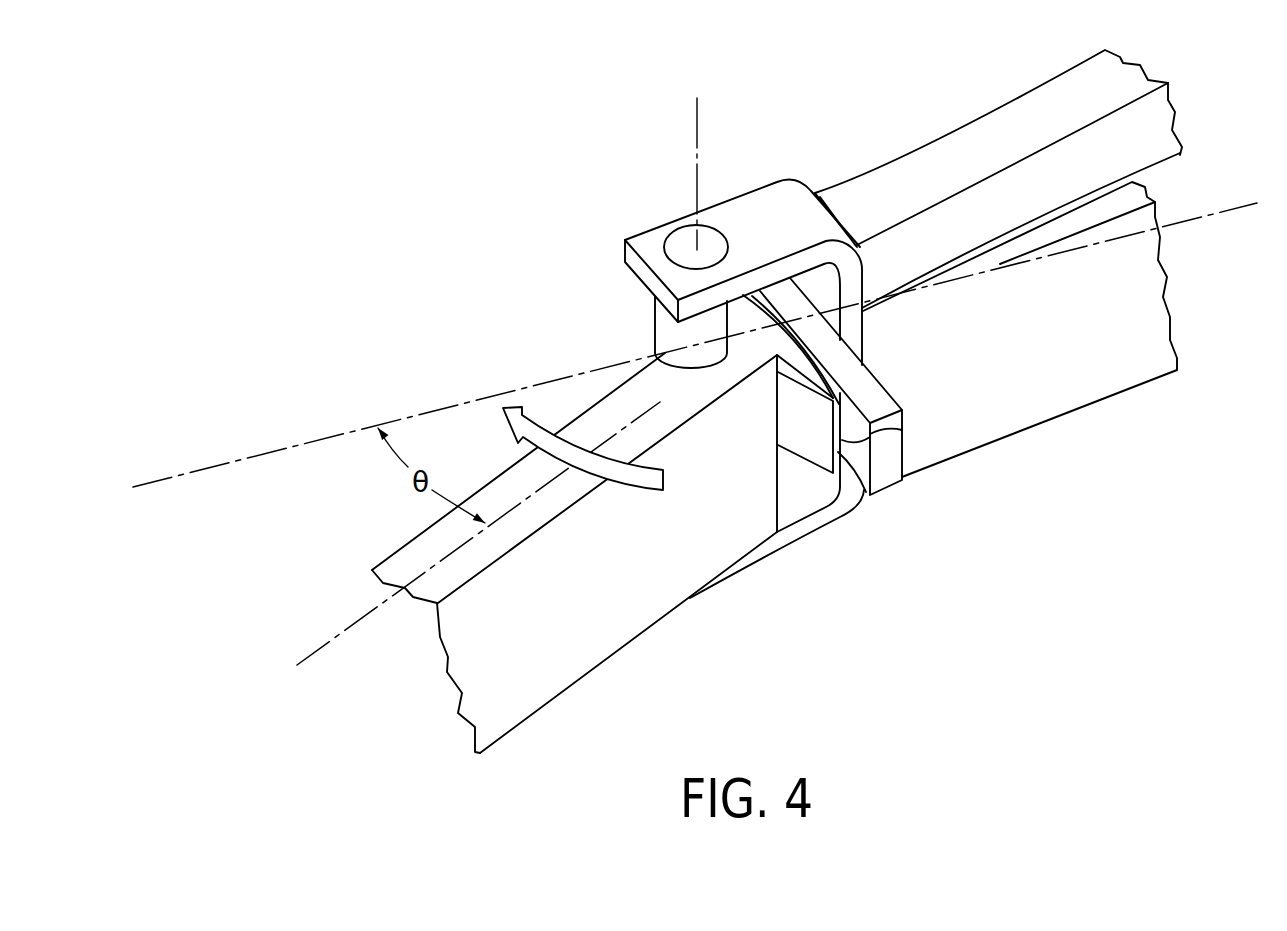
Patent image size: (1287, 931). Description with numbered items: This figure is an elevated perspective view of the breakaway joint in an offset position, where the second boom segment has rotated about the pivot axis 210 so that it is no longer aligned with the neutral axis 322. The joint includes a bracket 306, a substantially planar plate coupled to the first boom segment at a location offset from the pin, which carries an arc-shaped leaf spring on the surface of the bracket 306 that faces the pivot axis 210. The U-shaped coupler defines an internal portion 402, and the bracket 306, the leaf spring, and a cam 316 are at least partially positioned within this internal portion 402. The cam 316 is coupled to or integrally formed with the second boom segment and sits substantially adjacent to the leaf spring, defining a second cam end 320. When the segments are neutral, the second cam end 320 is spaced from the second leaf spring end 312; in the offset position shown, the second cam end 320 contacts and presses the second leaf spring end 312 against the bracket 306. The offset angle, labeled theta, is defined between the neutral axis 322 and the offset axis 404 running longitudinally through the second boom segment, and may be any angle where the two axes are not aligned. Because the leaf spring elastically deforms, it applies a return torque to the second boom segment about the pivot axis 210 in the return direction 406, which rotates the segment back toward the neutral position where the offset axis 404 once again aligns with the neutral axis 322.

The pivot axis 210 is at (699, 132).
The internal portion 402 is at (824, 283).
The bracket 306 is at (876, 393).
The second leaf spring end 312 is at (903, 430).
The cam 316 is at (786, 408).
The second cam end 320 is at (867, 489).
The neutral axis 322 is at (226, 462).
The offset axis 404 is at (328, 641).
The return direction 406 is at (624, 491).